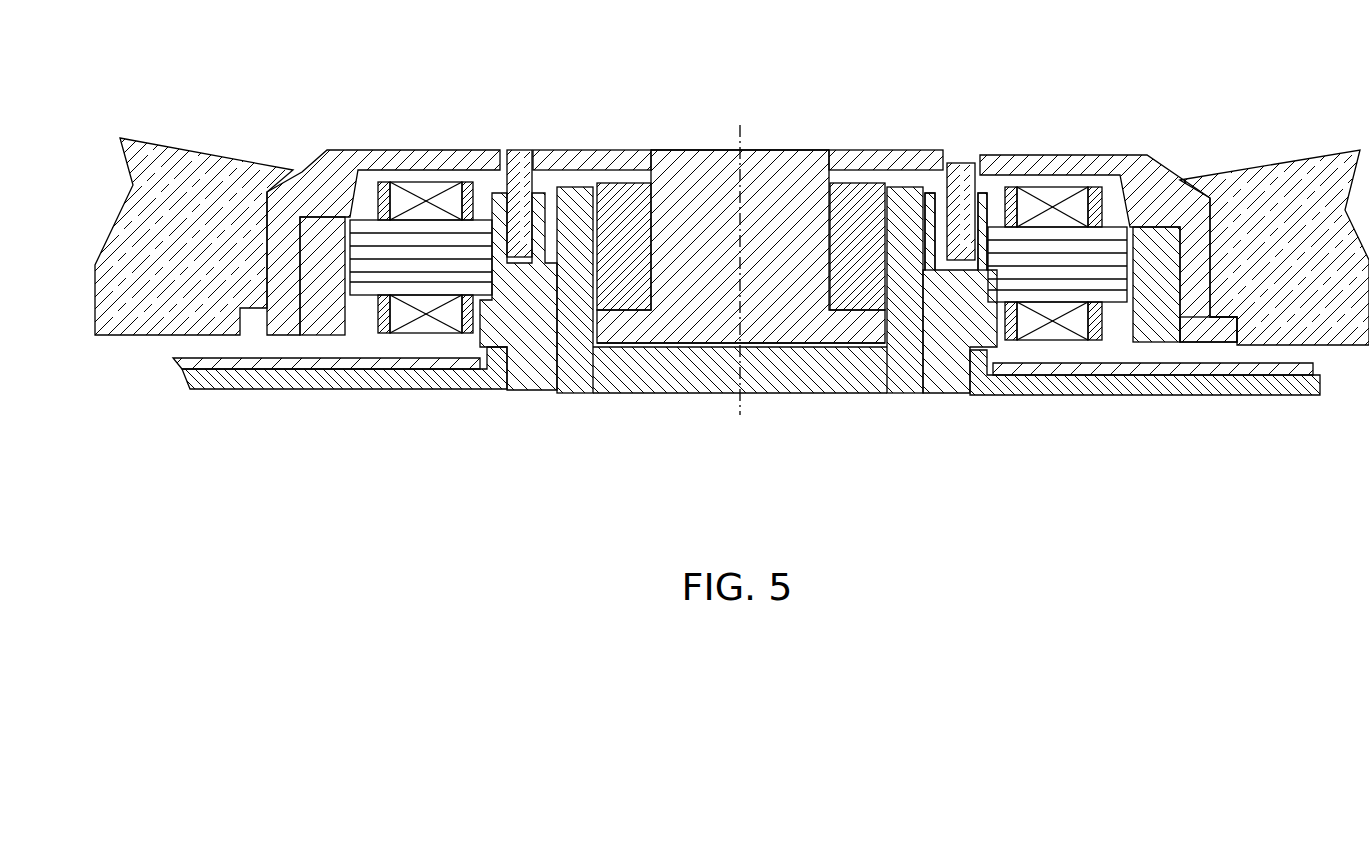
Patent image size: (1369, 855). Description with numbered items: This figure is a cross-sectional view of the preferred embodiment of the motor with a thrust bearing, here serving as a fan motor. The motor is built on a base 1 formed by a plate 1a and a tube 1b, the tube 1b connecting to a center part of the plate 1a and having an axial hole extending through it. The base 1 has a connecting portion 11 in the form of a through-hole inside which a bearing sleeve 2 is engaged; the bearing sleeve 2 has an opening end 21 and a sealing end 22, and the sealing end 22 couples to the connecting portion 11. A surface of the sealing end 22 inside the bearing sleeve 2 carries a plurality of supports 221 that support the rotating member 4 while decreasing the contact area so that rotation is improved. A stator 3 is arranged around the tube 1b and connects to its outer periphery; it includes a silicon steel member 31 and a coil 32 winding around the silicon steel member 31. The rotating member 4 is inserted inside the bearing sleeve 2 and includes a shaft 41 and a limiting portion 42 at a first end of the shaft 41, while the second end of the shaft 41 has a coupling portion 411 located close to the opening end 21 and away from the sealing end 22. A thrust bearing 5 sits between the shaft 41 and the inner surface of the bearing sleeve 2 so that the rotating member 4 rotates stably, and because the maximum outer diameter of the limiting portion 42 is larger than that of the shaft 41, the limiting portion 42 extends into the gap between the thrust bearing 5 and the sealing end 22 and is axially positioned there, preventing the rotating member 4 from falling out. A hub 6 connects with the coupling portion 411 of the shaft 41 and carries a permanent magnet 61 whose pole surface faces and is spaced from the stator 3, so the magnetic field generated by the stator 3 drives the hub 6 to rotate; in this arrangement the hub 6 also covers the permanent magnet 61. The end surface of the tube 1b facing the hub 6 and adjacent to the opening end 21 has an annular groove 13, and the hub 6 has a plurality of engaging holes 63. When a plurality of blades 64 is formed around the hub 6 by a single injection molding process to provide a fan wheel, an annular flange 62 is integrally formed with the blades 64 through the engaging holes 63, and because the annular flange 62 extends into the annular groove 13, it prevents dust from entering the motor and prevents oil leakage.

The base 1 is at (746, 367).
The plate 1a is at (297, 391).
The tube 1b is at (483, 333).
The connecting portion 11 is at (934, 370).
The annular groove 13 is at (505, 195).
The bearing sleeve 2 is at (739, 283).
The opening end 21 is at (893, 213).
The sealing end 22 is at (738, 431).
The supports 221 is at (620, 350).
The stator 3 is at (1101, 265).
The silicon steel member 31 is at (1113, 282).
The coil 32 is at (1067, 197).
The rotating member 4 is at (741, 272).
The shaft 41 is at (770, 180).
The coupling portion 411 is at (633, 167).
The limiting portion 42 is at (741, 412).
The thrust bearing 5 is at (862, 190).
The hub 6 is at (666, 245).
The permanent magnet 61 is at (1165, 322).
The annular flange 62 is at (957, 213).
The engaging holes 63 is at (990, 180).
The blades 64 is at (232, 175).